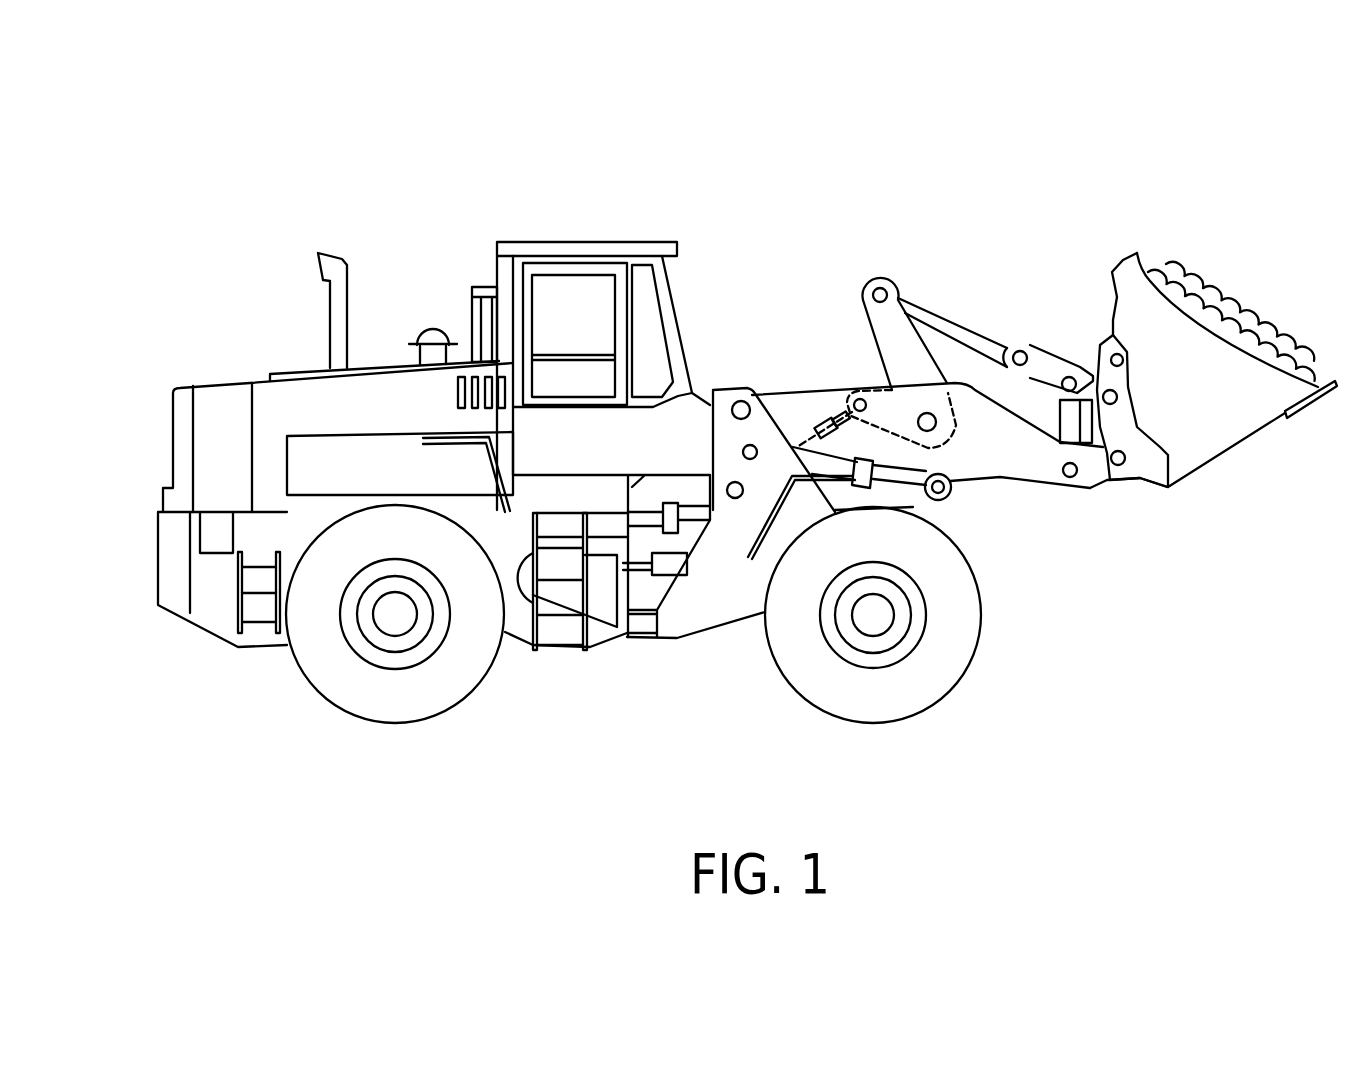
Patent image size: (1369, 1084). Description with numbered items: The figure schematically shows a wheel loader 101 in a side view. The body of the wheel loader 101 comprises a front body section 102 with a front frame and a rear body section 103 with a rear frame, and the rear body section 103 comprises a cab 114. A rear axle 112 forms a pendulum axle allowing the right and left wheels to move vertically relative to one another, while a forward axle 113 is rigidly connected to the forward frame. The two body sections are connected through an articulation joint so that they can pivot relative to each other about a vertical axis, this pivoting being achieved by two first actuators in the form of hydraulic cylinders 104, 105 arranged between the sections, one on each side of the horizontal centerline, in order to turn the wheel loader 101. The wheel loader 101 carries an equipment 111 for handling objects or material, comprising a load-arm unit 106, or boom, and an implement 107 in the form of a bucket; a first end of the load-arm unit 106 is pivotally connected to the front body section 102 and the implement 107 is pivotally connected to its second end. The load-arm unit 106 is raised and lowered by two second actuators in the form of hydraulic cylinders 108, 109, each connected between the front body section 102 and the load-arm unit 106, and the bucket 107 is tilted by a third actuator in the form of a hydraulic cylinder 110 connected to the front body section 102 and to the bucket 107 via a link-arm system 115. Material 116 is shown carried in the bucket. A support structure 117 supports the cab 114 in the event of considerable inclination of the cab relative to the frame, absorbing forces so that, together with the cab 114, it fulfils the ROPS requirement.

The wheel loader 101 is at (453, 168).
The front body section 102 is at (693, 608).
The rear body section 103 is at (217, 602).
The hydraulic cylinder 104 is at (532, 655).
The hydraulic cylinder 105 is at (697, 518).
The load-arm unit 106 is at (1090, 478).
The implement 107 is at (1200, 425).
The hydraulic cylinder 108 is at (1004, 545).
The hydraulic cylinder 109 is at (905, 487).
The hydraulic cylinder 110 is at (847, 400).
The equipment 111 is at (1042, 233).
The rear axle 112 is at (390, 617).
The forward axle 113 is at (878, 617).
The cab 114 is at (582, 248).
The link-arm system 115 is at (948, 327).
The material load 116 is at (1225, 312).
The support structure 117 is at (453, 295).